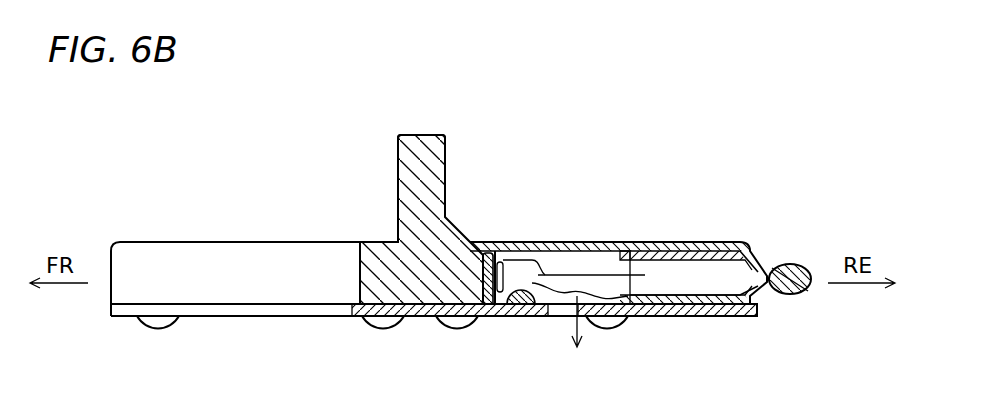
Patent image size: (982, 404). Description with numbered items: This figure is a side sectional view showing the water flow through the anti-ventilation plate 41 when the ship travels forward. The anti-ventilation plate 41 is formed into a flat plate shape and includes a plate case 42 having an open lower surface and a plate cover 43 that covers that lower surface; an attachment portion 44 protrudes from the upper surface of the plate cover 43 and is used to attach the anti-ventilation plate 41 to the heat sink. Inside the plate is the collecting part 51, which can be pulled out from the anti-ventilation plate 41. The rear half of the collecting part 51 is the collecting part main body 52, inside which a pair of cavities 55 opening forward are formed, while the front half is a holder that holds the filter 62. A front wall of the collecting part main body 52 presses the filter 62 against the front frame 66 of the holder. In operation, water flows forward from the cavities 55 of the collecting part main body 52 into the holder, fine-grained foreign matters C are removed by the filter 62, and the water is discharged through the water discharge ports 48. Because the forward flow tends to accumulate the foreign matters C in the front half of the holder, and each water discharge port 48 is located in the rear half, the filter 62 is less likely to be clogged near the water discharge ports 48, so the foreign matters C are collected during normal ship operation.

The anti-ventilation plate 41 is at (466, 238).
The plate case 42 is at (642, 243).
The plate cover 43 is at (655, 317).
The attachment portion 44 is at (398, 158).
The water discharge port 48 is at (562, 316).
The collecting part 51 is at (810, 246).
The collecting part main body 52 is at (757, 262).
The cavity 55 is at (705, 291).
The filter 62 is at (568, 260).
The front frame 66 is at (483, 302).
The foreign matters C is at (528, 264).